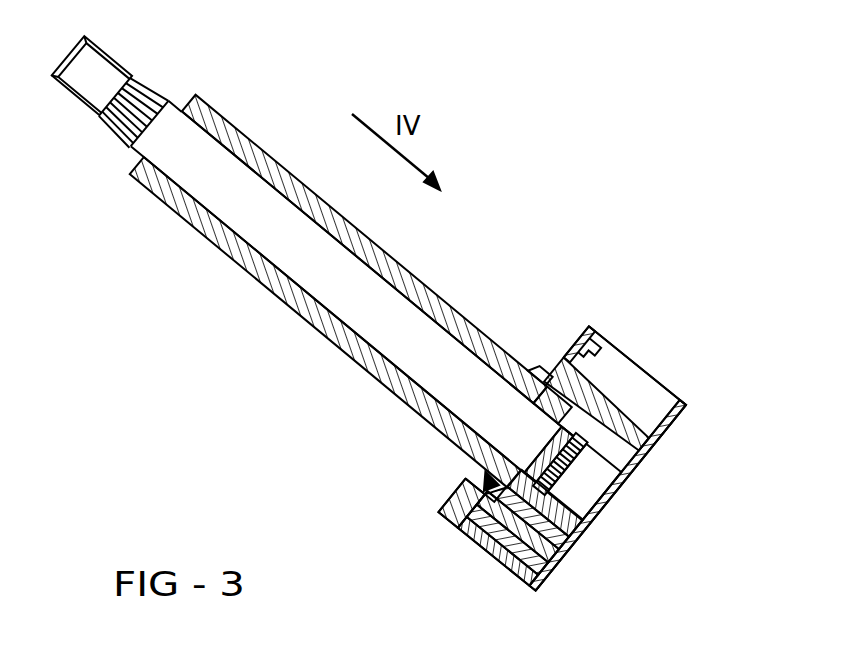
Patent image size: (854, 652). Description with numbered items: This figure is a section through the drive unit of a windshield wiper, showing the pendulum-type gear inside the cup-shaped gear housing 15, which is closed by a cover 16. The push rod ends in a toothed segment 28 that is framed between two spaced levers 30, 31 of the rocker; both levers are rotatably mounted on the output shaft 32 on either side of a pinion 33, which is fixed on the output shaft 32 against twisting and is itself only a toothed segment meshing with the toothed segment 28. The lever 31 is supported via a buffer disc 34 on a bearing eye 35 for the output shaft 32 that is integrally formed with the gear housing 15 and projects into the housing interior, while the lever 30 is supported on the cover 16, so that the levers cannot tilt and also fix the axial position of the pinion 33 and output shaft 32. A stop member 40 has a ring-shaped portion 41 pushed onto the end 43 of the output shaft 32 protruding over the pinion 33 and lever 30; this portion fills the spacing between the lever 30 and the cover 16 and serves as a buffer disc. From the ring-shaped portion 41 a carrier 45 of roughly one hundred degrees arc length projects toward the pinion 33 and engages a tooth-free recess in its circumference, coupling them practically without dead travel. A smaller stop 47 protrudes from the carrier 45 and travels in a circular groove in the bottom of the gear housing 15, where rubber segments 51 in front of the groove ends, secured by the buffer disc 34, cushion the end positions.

The gear housing 15 is at (591, 326).
The cover 16 is at (678, 424).
The toothed segment 28 is at (487, 548).
The lever 30 is at (554, 571).
The lever 31 is at (470, 546).
The output shaft 32 is at (262, 190).
The pinion 33 is at (578, 521).
The buffer disc 34 is at (462, 508).
The bearing eye 35 is at (548, 372).
The stop member 40 is at (641, 398).
The ring-shaped portion 41 is at (566, 546).
The end of the output shaft 43 is at (584, 479).
The carrier 45 is at (626, 374).
The stop 47 is at (606, 350).
The rubber segments 51 is at (474, 481).